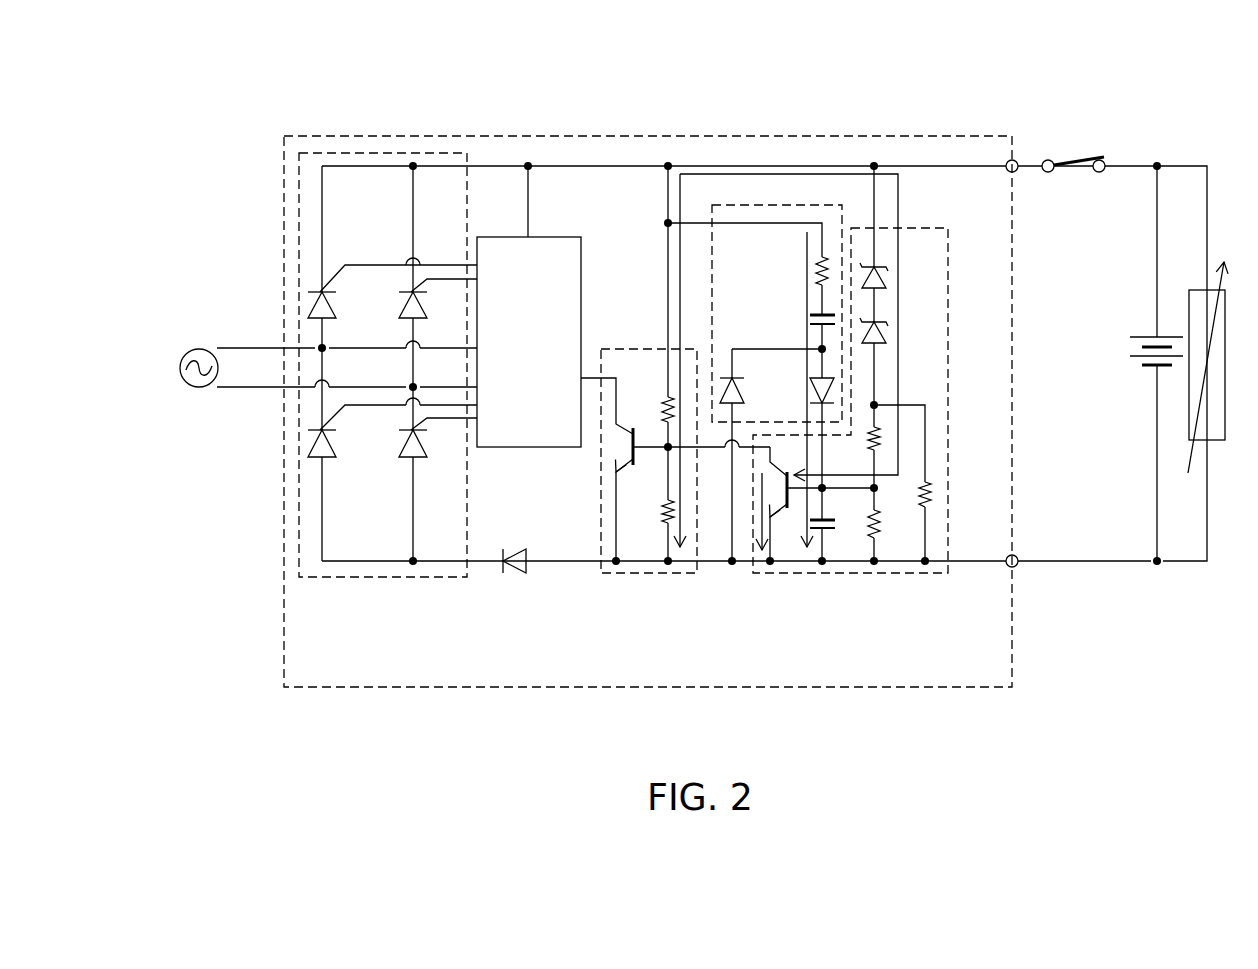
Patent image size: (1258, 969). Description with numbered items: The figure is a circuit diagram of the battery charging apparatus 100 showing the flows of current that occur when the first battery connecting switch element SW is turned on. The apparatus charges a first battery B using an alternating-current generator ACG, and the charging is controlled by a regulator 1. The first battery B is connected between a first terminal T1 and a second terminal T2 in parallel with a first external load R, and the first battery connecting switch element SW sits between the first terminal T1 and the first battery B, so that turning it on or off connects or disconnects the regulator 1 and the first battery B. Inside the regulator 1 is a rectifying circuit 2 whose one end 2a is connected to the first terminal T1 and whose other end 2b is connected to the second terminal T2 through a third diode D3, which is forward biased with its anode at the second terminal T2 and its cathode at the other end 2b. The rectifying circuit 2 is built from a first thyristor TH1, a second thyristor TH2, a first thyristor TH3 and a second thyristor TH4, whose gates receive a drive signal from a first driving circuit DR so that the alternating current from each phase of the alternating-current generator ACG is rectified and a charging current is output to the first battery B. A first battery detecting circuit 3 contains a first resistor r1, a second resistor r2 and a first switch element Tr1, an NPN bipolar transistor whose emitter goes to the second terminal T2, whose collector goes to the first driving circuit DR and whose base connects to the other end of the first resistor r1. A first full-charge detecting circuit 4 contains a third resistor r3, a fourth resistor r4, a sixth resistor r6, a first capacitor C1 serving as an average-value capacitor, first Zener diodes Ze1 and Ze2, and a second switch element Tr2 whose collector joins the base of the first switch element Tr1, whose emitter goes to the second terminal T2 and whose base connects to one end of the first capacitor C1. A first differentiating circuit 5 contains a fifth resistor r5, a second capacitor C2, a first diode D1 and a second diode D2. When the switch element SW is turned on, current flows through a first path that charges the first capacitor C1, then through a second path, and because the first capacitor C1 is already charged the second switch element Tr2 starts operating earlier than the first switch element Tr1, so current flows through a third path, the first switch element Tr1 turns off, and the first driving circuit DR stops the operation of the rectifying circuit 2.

The regulator 1 is at (843, 135).
The rectifying circuit 2 is at (392, 152).
The one end of rectifying circuit 2a is at (467, 165).
The other end of rectifying circuit 2b is at (473, 577).
The first battery detecting circuit 3 is at (640, 576).
The first full-charge detecting circuit 4 is at (952, 290).
The first differentiating circuit 5 is at (812, 204).
The battery charging apparatus 100 is at (721, 740).
The alternating-current generator ACG is at (199, 349).
The first thyristor TH1 is at (307, 301).
The second thyristor TH2 is at (307, 440).
The first thyristor TH3 is at (405, 306).
The second thyristor TH4 is at (405, 444).
The first driving circuit DR is at (558, 237).
The first switch element Tr1 is at (628, 430).
The second switch element Tr2 is at (790, 475).
The first resistor r1 is at (664, 405).
The second resistor r2 is at (663, 509).
The third resistor r3 is at (869, 441).
The fourth resistor r4 is at (877, 516).
The fifth resistor r5 is at (815, 272).
The sixth resistor r6 is at (932, 495).
The first capacitor C1 is at (828, 521).
The second capacitor C2 is at (810, 317).
The first diode D1 is at (815, 388).
The second diode D2 is at (742, 392).
The third diode D3 is at (512, 548).
The first Zener diode Ze1 is at (886, 277).
The first Zener diode Ze2 is at (886, 333).
The first terminal T1 is at (1012, 159).
The second terminal T2 is at (1018, 566).
The first battery connecting switch element SW is at (1078, 157).
The first battery B is at (1140, 337).
The first external load R is at (1200, 290).